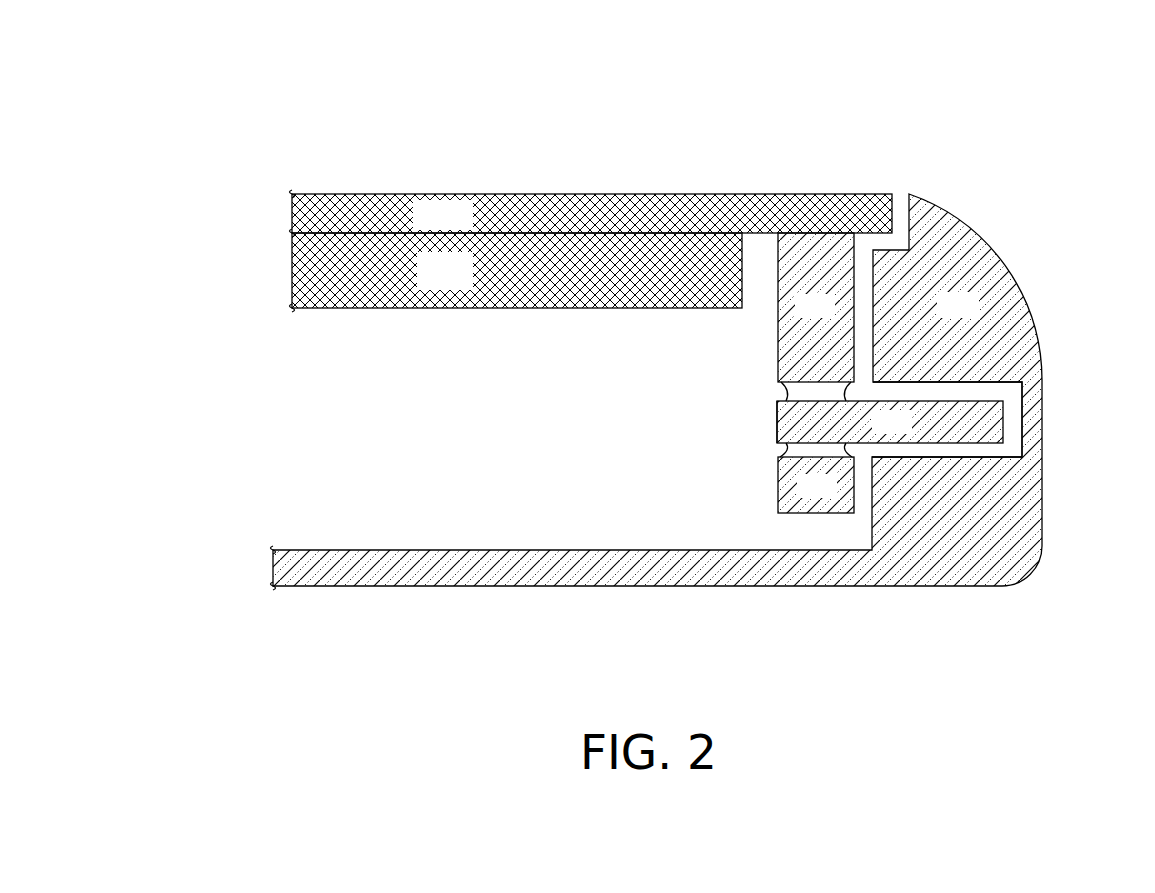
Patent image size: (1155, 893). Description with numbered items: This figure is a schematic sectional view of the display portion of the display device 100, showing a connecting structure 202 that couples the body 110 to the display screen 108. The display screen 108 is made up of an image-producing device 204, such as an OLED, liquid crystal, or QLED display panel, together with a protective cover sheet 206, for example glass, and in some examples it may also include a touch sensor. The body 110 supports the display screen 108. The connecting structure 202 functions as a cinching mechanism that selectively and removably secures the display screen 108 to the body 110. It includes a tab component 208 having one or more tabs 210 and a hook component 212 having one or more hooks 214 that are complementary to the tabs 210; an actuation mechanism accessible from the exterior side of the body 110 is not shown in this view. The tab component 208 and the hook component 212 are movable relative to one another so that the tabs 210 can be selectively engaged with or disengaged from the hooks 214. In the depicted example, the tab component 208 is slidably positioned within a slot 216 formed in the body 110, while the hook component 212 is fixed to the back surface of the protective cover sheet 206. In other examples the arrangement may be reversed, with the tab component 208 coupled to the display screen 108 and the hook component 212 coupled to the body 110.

The display device 100 is at (855, 99).
The display screen 108 is at (543, 251).
The body 110 is at (973, 314).
The connecting structure 202 is at (745, 393).
The image-producing device 204 is at (460, 279).
The protective cover sheet 206 is at (460, 224).
The tab component 208 is at (908, 432).
The tab 210 is at (778, 419).
The hook component 212 is at (831, 316).
The hook 214 is at (833, 496).
The slot 216 is at (981, 388).